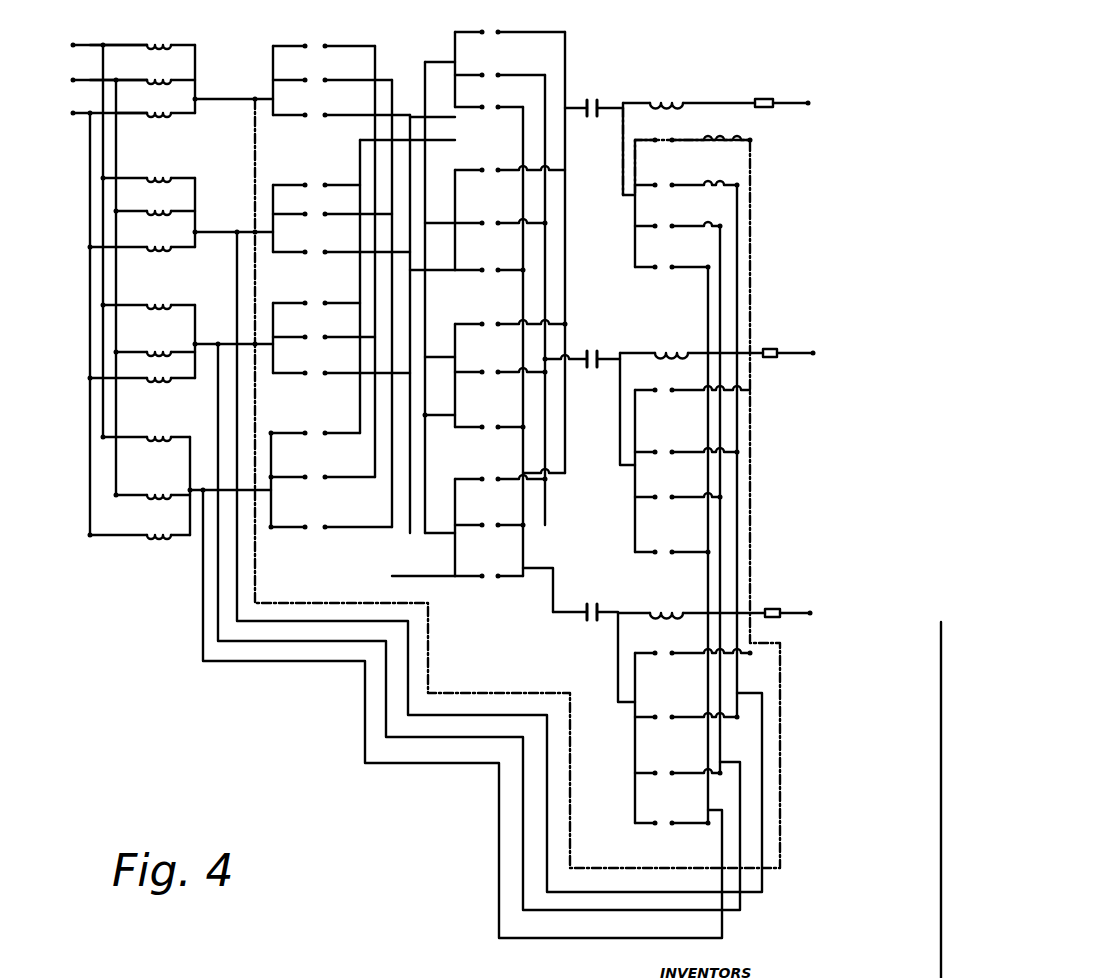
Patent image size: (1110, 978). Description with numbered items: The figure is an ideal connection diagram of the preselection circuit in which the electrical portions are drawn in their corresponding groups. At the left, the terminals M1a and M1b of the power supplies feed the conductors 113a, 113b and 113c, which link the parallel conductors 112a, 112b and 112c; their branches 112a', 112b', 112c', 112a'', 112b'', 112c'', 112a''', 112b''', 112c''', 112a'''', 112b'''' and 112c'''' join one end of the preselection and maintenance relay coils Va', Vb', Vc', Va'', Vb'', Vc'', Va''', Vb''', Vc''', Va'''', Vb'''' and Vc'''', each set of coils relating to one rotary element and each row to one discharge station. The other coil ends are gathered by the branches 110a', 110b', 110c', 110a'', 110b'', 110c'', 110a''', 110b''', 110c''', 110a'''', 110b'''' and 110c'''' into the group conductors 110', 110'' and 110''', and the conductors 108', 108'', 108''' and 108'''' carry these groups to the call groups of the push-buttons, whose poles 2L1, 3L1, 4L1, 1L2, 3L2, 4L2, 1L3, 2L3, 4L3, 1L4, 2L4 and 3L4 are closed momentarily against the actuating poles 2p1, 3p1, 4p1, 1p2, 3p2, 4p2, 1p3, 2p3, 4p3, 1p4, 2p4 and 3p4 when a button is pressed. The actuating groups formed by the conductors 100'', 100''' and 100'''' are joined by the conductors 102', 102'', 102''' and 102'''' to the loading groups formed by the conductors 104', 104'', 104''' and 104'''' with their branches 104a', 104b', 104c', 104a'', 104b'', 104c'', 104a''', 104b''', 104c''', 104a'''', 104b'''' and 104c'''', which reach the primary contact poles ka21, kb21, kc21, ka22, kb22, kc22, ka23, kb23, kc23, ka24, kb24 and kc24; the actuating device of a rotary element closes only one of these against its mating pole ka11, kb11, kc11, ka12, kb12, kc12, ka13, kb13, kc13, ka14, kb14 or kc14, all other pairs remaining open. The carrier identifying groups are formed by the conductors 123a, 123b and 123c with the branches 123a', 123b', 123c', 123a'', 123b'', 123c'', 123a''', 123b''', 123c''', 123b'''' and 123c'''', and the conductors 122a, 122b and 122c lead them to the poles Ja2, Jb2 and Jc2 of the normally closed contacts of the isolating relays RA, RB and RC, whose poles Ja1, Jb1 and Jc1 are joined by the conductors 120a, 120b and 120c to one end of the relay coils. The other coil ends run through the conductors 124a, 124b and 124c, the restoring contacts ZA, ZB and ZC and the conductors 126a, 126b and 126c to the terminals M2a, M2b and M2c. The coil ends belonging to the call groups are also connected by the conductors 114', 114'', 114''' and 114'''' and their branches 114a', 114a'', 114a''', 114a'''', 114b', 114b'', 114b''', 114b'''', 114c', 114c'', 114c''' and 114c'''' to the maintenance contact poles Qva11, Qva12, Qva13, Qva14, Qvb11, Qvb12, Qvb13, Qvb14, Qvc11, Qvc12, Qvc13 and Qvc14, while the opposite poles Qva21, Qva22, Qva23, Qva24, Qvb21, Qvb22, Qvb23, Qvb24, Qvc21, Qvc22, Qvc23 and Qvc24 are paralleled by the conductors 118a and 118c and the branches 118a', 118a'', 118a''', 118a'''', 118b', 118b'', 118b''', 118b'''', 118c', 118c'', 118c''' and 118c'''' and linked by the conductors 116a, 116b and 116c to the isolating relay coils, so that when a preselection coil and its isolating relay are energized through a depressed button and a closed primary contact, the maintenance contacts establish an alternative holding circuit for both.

The terminal of power supply MA M1a is at (91, 33).
The terminal of power supply MB M1b is at (91, 70).
The conductor 113a is at (92, 42).
The conductor 113b is at (95, 80).
The conductor 113c is at (88, 113).
The conductor 112a is at (127, 278).
The conductor 112b is at (139, 287).
The conductor 112c is at (67, 324).
The branch of conductor 112a 112a' is at (127, 34).
The branch of conductor 112b 112b' is at (134, 70).
The branch of conductor 112c 112c' is at (140, 102).
The branch of conductor 112a 112a'' is at (135, 164).
The branch of conductor 112b 112b'' is at (140, 199).
The branch of conductor 112c 112c'' is at (127, 236).
The branch of conductor 112a 112a''' is at (136, 293).
The branch of conductor 112b 112b''' is at (142, 343).
The branch of conductor 112c 112c''' is at (128, 370).
The branch of conductor 112a 112a'''' is at (137, 422).
The branch of conductor 112b 112b'''' is at (145, 476).
The branch of conductor 112c 112c'''' is at (127, 526).
The preselection and maintenance relay coil Va' is at (162, 33).
The preselection and maintenance relay coil Vb' is at (163, 68).
The preselection and maintenance relay coil Vc' is at (164, 101).
The preselection and maintenance relay coil Va'' is at (167, 170).
The preselection and maintenance relay coil Vb'' is at (172, 199).
The preselection and maintenance relay coil Vc'' is at (153, 259).
The preselection and maintenance relay coil Va''' is at (173, 290).
The preselection and maintenance relay coil Vb''' is at (169, 336).
The preselection and maintenance relay coil Vc''' is at (149, 389).
The preselection and maintenance relay coil Va'''' is at (150, 445).
The preselection and maintenance relay coil Vb'''' is at (151, 487).
The preselection and maintenance relay coil Vc'''' is at (148, 546).
The conductor 110' is at (216, 83).
The conductor 110'' is at (219, 209).
The conductor 110''' is at (218, 341).
The branch of conductor 110' 110a' is at (209, 35).
The branch of conductor 110' 110b' is at (209, 68).
The branch of conductor 110' 110c' is at (204, 125).
The branch of conductor 110'' 110a'' is at (209, 158).
The branch of conductor 110'' 110b'' is at (212, 203).
The branch of conductor 110'' 110c'' is at (208, 247).
The branch of conductor 110''' 110a''' is at (206, 296).
The branch of conductor 110''' 110b''' is at (197, 379).
The branch of conductor 110''' 110c''' is at (200, 383).
The branch of conductor 110 110a'''' is at (198, 475).
The branch of conductor 110 110b'''' is at (178, 508).
The branch of conductor 110 110c'''' is at (154, 556).
The conductor 108' is at (233, 89).
The conductor 108'' is at (233, 224).
The conductor 108''' is at (233, 335).
The conductor 108'''' is at (215, 538).
The conductor 114' is at (462, 714).
The conductor 114'' is at (479, 627).
The conductor 114''' is at (499, 562).
The conductor 114'''' is at (517, 484).
The push-button pole 2L1 is at (290, 56).
The push-button pole 3L1 is at (290, 75).
The push-button pole 4L1 is at (290, 107).
The push-button pole 1L2 is at (290, 177).
The push-button pole 3L2 is at (290, 206).
The push-button pole 4L2 is at (290, 244).
The push-button pole 1L3 is at (297, 288).
The push-button pole 2L3 is at (290, 329).
The push-button pole 4L3 is at (290, 365).
The push-button pole 1L4 is at (288, 425).
The push-button pole 2L4 is at (288, 466).
The push-button pole 3L4 is at (288, 519).
The push-button pole 2p1 is at (345, 37).
The push-button pole 3p1 is at (354, 75).
The push-button pole 4p1 is at (362, 109).
The push-button pole 1p2 is at (339, 176).
The push-button pole 3p2 is at (355, 206).
The push-button pole 4p2 is at (363, 244).
The push-button pole 1p3 is at (340, 297).
The push-button pole 2p3 is at (345, 329).
The push-button pole 4p3 is at (362, 365).
The push-button pole 1p4 is at (339, 425).
The push-button pole 2p4 is at (346, 467).
The push-button pole 3p4 is at (356, 519).
The conductor 100'' is at (419, 284).
The conductor 100''' is at (402, 261).
The conductor 100'''' is at (425, 303).
The conductor 102' is at (429, 310).
The conductor 102'' is at (405, 286).
The conductor 102''' is at (424, 406).
The conductor 102'''' is at (435, 544).
The conductor 104' is at (434, 63).
The conductor 104'' is at (434, 211).
The conductor 104''' is at (433, 317).
The conductor 104'''' is at (435, 503).
The branch of conductor 104' 104a' is at (483, 11).
The branch of conductor 104' 104b' is at (482, 61).
The branch of conductor 104' 104c' is at (411, 133).
The branch of conductor 104'' 104a'' is at (441, 207).
The branch of conductor 104'' 104b'' is at (436, 227).
The branch of conductor 104'' 104c'' is at (434, 253).
The branch of conductor 104''' 104a''' is at (438, 359).
The branch of conductor 104''' 104b''' is at (436, 345).
The branch of conductor 104''' 104c''' is at (481, 415).
The branch of conductor 104'''' 104a'''' is at (452, 512).
The branch of conductor 104'''' 104b'''' is at (484, 565).
The branch of conductor 104'''' 104c'''' is at (427, 586).
The primary contact pole ka11 is at (531, 45).
The primary contact pole ka21 is at (475, 43).
The primary contact pole kb11 is at (511, 92).
The primary contact pole kb21 is at (473, 85).
The primary contact pole kc11 is at (505, 128).
The primary contact pole kc21 is at (474, 118).
The primary contact pole ka12 is at (517, 183).
The primary contact pole ka22 is at (478, 163).
The primary contact pole kb12 is at (509, 234).
The primary contact pole kb22 is at (475, 243).
The primary contact pole kc12 is at (497, 289).
The primary contact pole kc22 is at (477, 282).
The primary contact pole ka13 is at (529, 343).
The primary contact pole ka23 is at (474, 336).
The primary contact pole kb13 is at (508, 382).
The primary contact pole kb23 is at (473, 369).
The primary contact pole kc13 is at (502, 445).
The primary contact pole kc23 is at (472, 438).
The primary contact pole ka14 is at (509, 498).
The primary contact pole ka24 is at (473, 491).
The primary contact pole kb14 is at (498, 544).
The primary contact pole kb24 is at (475, 537).
The primary contact pole kc14 is at (514, 600).
The primary contact pole kc24 is at (472, 593).
The conductor 123a is at (593, 45).
The conductor 123b is at (569, 503).
The conductor 123c is at (559, 543).
The branch of conductor 123a 123a' is at (549, 242).
The branch of conductor 123b 123b' is at (534, 289).
The branch of conductor 123c 123c' is at (526, 326).
The branch of conductor 123a 123a'' is at (491, 203).
The branch of conductor 123b 123b'' is at (492, 218).
The branch of conductor 123c 123c'' is at (495, 315).
The branch of conductor 123a 123a''' is at (589, 296).
The branch of conductor 123b 123b''' is at (498, 399).
The branch of conductor 123c 123c''' is at (517, 473).
The branch of conductor 123b 123b'''' is at (580, 519).
The branch of conductor 123c 123c'''' is at (554, 544).
The conductor 120a is at (597, 99).
The conductor 120b is at (603, 353).
The conductor 120c is at (611, 600).
The conductor 122a is at (594, 85).
The conductor 122b is at (582, 340).
The conductor 122c is at (568, 627).
The conductor 116a is at (606, 149).
The conductor 116b is at (606, 409).
The conductor 116c is at (606, 665).
The contact pole Ja1 is at (589, 159).
The contact pole Ja2 is at (581, 135).
The contact pole Jb1 is at (587, 409).
The contact pole Jb2 is at (577, 385).
The contact pole Jc1 is at (578, 683).
The contact pole Jc2 is at (571, 657).
The isolating relay RA is at (666, 92).
The isolating relay RB is at (671, 345).
The isolating relay RC is at (666, 605).
The restoring contacts ZA is at (760, 91).
The restoring contacts ZB is at (768, 342).
The restoring contacts ZC is at (770, 604).
The conductor 124a is at (715, 91).
The conductor 124b is at (716, 333).
The conductor 124c is at (714, 587).
The conductor 126a is at (792, 98).
The conductor 126b is at (794, 346).
The conductor 126c is at (796, 608).
The terminal of power supply MA M2a is at (793, 123).
The terminal of power supply MB M2b is at (797, 365).
The terminal of power supply M2c is at (793, 629).
The maintenance contact pole Qva11 is at (711, 126).
The maintenance contact pole Qva12 is at (705, 173).
The maintenance contact pole Qva13 is at (699, 214).
The maintenance contact pole Qva14 is at (682, 259).
The maintenance contact pole Qva21 is at (657, 194).
The maintenance contact pole Qva22 is at (657, 176).
The maintenance contact pole Qva23 is at (659, 217).
The maintenance contact pole Qva24 is at (663, 284).
The maintenance contact pole Qvb11 is at (707, 377).
The maintenance contact pole Qvb12 is at (699, 444).
The maintenance contact pole Qvb13 is at (691, 491).
The maintenance contact pole Qvb14 is at (680, 545).
The maintenance contact pole Qvb21 is at (650, 461).
The maintenance contact pole Qvb22 is at (660, 435).
The maintenance contact pole Qvb23 is at (659, 485).
The maintenance contact pole Qvb24 is at (660, 538).
The maintenance contact pole Qvc11 is at (707, 655).
The maintenance contact pole Qvc12 is at (699, 711).
The maintenance contact pole Qvc13 is at (690, 769).
The maintenance contact pole Qvc14 is at (677, 812).
The maintenance contact pole Qvc21 is at (657, 724).
The maintenance contact pole Qvc22 is at (658, 703).
The maintenance contact pole Qvc23 is at (658, 760).
The maintenance contact pole Qvc24 is at (658, 838).
The conductor 114a' is at (717, 131).
The conductor 114a'' is at (775, 193).
The conductor 114a''' is at (774, 238).
The conductor 114a'''' is at (692, 299).
The conductor 114b' is at (772, 407).
The conductor 114b'' is at (769, 437).
The conductor 114b''' is at (765, 497).
The conductor 114b'''' is at (692, 575).
The conductor 114c' is at (759, 667).
The conductor 114c'' is at (747, 737).
The conductor 114c''' is at (733, 789).
The conductor 114c'''' is at (691, 859).
The conductor 118a is at (617, 241).
The branch of conductor 118a 118a' is at (665, 155).
The branch of conductor 118a 118a'' is at (667, 199).
The branch of conductor 118a 118a''' is at (670, 241).
The branch of conductor 118a 118a'''' is at (624, 271).
The branch of conductor 118b 118b' is at (662, 403).
The branch of conductor 118b 118b'' is at (666, 461).
The branch of conductor 118b 118b''' is at (668, 515).
The branch of conductor 118b 118b'''' is at (650, 565).
The conductor 118c is at (615, 803).
The branch of conductor 118c 118c' is at (663, 673).
The branch of conductor 118c 118c'' is at (663, 737).
The branch of conductor 118c 118c''' is at (667, 789).
The branch of conductor 118c 118c'''' is at (621, 823).